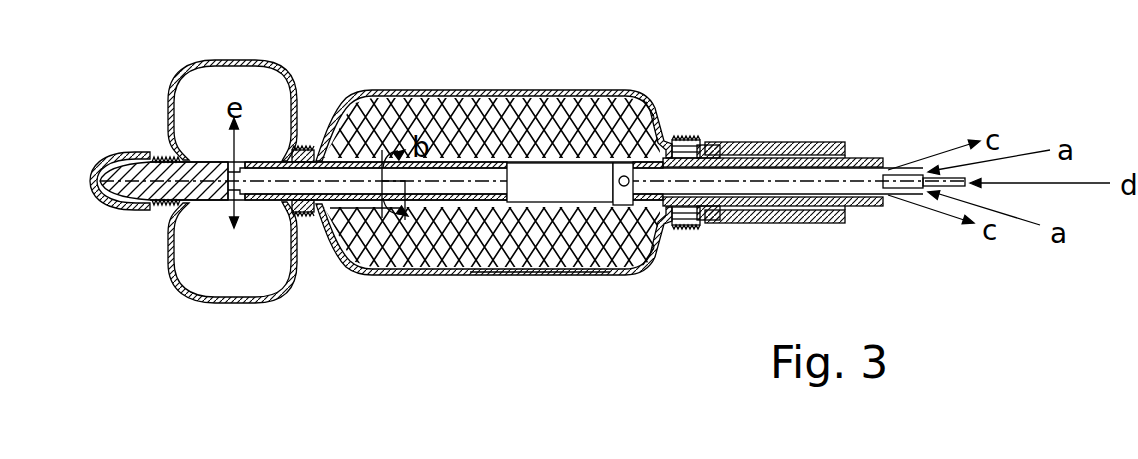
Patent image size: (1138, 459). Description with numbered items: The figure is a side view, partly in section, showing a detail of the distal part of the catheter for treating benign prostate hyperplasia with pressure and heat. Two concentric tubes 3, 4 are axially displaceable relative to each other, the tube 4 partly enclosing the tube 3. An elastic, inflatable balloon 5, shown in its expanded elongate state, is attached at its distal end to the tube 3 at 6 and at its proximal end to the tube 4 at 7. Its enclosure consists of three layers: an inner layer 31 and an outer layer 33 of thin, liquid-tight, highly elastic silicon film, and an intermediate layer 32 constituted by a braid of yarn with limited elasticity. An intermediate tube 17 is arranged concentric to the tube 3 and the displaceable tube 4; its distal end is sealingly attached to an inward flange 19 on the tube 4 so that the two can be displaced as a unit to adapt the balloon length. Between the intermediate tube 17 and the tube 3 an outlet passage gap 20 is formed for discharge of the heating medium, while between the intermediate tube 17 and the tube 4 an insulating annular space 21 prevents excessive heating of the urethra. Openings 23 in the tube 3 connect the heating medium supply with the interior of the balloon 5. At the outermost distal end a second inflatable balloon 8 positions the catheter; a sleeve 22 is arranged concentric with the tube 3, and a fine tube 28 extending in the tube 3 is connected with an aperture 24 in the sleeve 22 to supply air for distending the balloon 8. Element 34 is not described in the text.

The tube 3 is at (400, 90).
The tube 4 is at (726, 147).
The elastic, inflatable balloon 5 is at (457, 278).
The distal attachment of balloon 6 is at (298, 216).
The proximal attachment of balloon 7 is at (685, 226).
The second inflatable balloon 8 is at (229, 303).
The intermediate tube 17 is at (714, 226).
The inward flange 19 is at (676, 140).
The outlet passage gap 20 is at (600, 90).
The insulating annular space 21 is at (755, 226).
The sleeve 22 is at (137, 195).
The openings 23 is at (343, 110).
The openings 24 is at (236, 172).
The fine tube 28 is at (388, 277).
The inner layer 31 is at (510, 278).
The intermediate layer 32 is at (538, 278).
The outer layer 33 is at (585, 277).
The end piece 34 is at (624, 270).